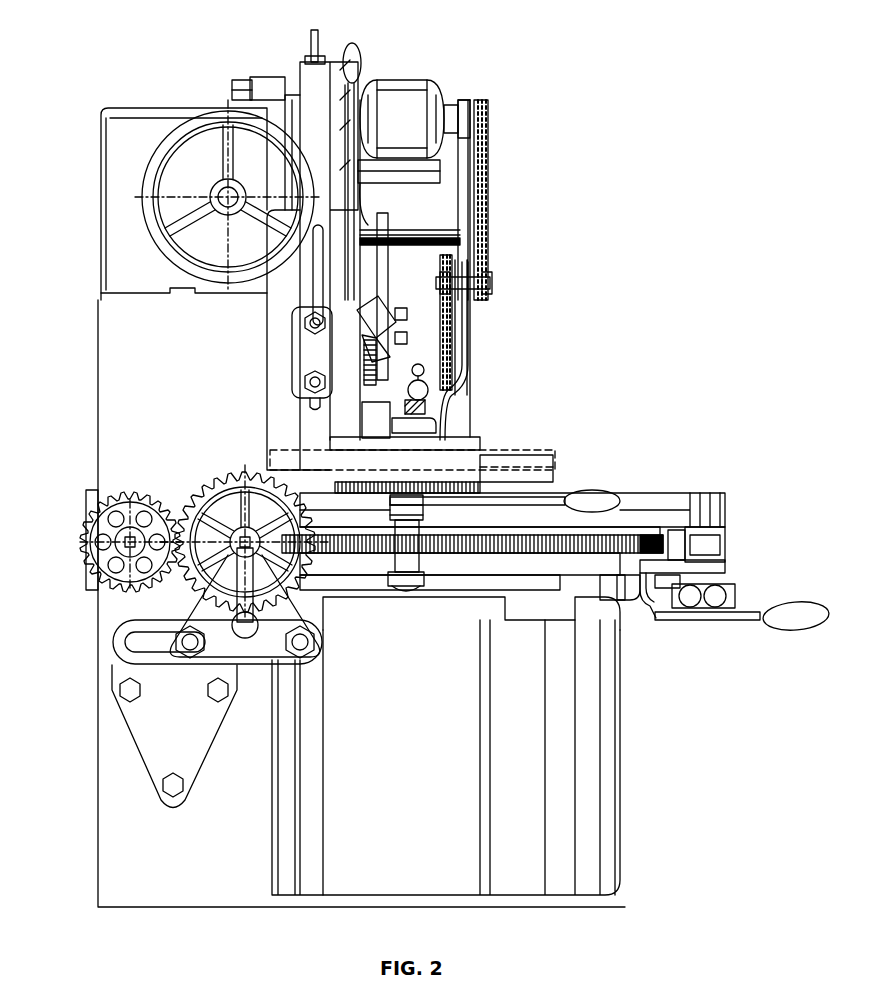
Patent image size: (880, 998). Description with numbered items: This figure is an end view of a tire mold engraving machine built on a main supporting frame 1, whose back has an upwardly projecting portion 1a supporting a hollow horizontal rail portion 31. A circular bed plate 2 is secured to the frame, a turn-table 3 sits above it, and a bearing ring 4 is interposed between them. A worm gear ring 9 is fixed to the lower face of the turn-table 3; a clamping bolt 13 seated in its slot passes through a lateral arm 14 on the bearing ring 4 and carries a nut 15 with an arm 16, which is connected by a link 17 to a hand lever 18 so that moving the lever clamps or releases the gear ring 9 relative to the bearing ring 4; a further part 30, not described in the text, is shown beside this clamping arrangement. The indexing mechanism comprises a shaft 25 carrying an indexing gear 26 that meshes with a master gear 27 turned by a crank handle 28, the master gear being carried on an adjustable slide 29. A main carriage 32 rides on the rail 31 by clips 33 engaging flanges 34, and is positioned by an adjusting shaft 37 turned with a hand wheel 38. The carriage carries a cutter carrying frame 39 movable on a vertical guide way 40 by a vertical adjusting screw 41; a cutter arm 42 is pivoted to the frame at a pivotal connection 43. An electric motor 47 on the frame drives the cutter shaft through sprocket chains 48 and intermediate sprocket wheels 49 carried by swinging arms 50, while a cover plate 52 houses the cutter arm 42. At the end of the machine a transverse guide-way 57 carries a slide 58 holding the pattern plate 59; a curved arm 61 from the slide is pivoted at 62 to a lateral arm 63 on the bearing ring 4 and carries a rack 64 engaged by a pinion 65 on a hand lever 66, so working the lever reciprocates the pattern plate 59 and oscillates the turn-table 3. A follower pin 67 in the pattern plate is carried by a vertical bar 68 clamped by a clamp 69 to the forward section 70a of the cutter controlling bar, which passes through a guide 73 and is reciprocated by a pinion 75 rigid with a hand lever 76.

The main supporting frame 1 is at (622, 740).
The upwardly projecting portion 1a is at (102, 368).
The circular bed plate 2 is at (620, 622).
The turn-table 3 is at (695, 493).
The bearing ring 4 is at (607, 585).
The worm gear ring 9 is at (674, 545).
The clamping bolt 13 is at (625, 592).
The lateral arm 14 is at (726, 568).
The nut 15 is at (650, 590).
The arm 16 is at (676, 583).
The link 17 is at (720, 592).
The hand lever 18 is at (740, 620).
The shaft 25 is at (127, 545).
The indexing gear 26 is at (104, 590).
The master gear 27 is at (232, 483).
The crank handle 28 is at (250, 600).
The slide 29 is at (300, 613).
The clamp 30 is at (716, 553).
The hollow horizontal rail portion 31 is at (118, 145).
The main carriage 32 is at (262, 82).
The clip 33 is at (250, 82).
The flange 34 is at (280, 100).
The adjusting shaft 37 is at (222, 192).
The hand wheel 38 is at (152, 212).
The cutter carrying frame 39 is at (366, 178).
The vertical guide way 40 is at (330, 78).
The vertical adjusting screw 41 is at (318, 40).
The cutter arm 42 is at (430, 408).
The pivotal connection 43 is at (440, 425).
The electric motor 47 is at (400, 92).
The sprocket chain 48 is at (486, 196).
The intermediate sprocket wheel 49 is at (442, 280).
The swinging arm 50 is at (466, 182).
The cover plate 52 is at (464, 358).
The guide-way 57 is at (535, 460).
The slide 58 is at (480, 448).
The pattern plate 59 is at (482, 442).
The curved arm 61 is at (390, 512).
The pivotal connection 62 is at (410, 575).
The lateral arm 63 is at (448, 565).
The rack 64 is at (482, 494).
The pinion 65 is at (425, 480).
The hand lever 66 is at (548, 500).
The follower pin 67 is at (403, 405).
The vertical bar 68 is at (388, 225).
The clamp 69 is at (397, 312).
The forward section of cutter controlling bar 70a is at (398, 322).
The guide 73 is at (385, 360).
The pinion 75 is at (358, 385).
The hand lever 76 is at (350, 278).